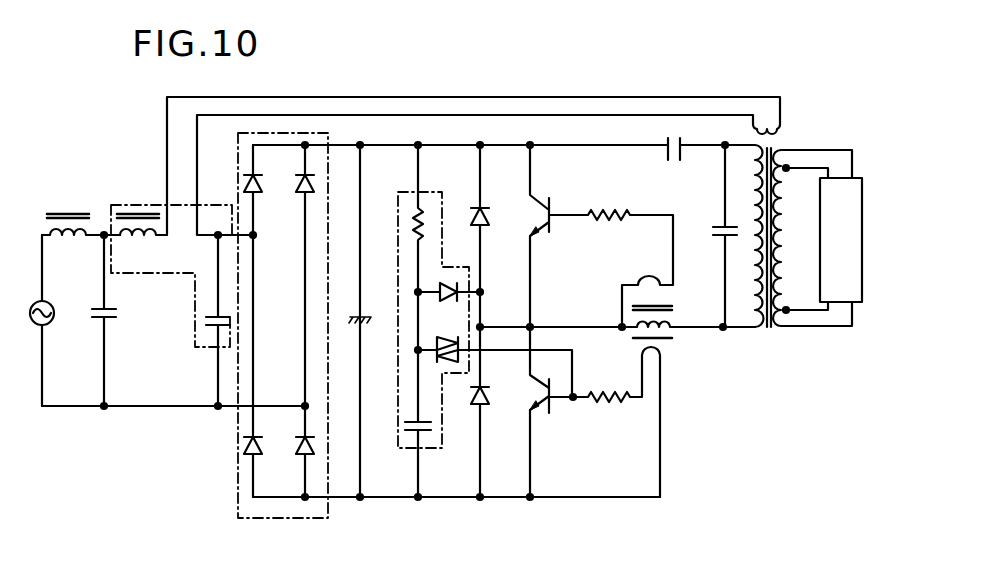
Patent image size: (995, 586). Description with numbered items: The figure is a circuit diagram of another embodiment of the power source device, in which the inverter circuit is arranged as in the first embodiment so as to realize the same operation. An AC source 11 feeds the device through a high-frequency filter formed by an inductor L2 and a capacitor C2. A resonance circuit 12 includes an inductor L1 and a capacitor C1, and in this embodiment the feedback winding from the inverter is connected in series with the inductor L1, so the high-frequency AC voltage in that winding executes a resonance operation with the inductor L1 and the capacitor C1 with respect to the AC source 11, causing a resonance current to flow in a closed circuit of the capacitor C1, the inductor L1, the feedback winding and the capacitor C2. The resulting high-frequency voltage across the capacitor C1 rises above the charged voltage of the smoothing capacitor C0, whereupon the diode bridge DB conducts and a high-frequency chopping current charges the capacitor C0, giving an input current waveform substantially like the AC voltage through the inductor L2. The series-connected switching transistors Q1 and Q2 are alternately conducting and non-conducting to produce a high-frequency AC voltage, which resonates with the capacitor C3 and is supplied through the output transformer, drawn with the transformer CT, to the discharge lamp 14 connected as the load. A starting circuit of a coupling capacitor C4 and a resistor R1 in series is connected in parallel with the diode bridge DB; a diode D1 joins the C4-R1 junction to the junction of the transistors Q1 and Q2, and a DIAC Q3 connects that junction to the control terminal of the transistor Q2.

The AC source 11 is at (53, 322).
The resonance circuit 12 is at (140, 205).
The discharge lamp 14 is at (825, 290).
The inductor L1 is at (142, 244).
The inductor L2 is at (81, 209).
The capacitor C1 is at (205, 347).
The capacitor C2 is at (124, 320).
The capacitor C3 is at (702, 232).
The coupling capacitor C4 is at (432, 428).
The smoothing capacitor C0 is at (373, 321).
The diode bridge DB is at (248, 520).
The resistor R1 is at (425, 212).
The diode D1 is at (457, 283).
The switching transistor Q1 is at (601, 236).
The switching transistor Q2 is at (595, 412).
The DIAC Q3 is at (460, 352).
The current transformer CT is at (688, 338).